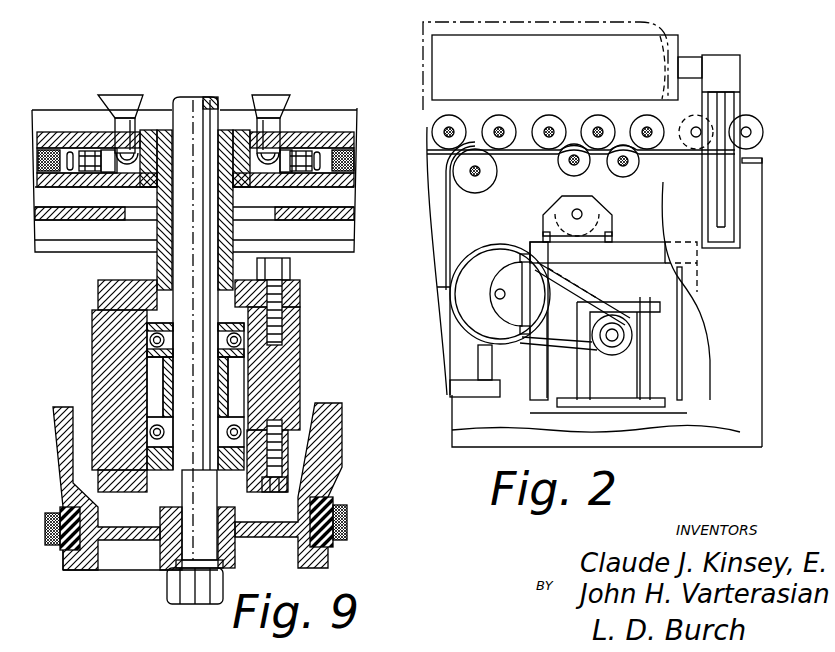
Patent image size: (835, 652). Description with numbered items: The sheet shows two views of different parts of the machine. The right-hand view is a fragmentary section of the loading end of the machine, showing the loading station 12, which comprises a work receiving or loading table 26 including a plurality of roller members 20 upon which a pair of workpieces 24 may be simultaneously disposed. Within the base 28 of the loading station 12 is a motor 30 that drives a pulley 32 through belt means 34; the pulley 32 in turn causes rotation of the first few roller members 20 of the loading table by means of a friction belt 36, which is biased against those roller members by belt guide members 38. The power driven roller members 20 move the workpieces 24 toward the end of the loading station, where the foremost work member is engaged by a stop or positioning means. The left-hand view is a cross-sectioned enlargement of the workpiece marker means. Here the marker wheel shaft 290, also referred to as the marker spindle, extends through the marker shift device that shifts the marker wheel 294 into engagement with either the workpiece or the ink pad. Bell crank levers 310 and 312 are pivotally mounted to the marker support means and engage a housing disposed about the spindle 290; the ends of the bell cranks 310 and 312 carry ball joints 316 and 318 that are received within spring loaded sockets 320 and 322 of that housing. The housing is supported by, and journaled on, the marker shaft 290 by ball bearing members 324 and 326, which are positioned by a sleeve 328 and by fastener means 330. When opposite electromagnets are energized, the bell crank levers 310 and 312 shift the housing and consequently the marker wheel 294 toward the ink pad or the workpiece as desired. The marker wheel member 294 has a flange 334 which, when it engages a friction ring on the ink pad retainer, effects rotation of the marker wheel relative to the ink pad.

In FIG. 9, the marker wheel shaft 290 is at (184, 107).
In FIG. 9, the bell crank lever 310 is at (128, 108).
In FIG. 9, the bell crank lever 312 is at (268, 108).
In FIG. 9, the ball joint 316 is at (122, 157).
In FIG. 9, the ball joint 318 is at (278, 150).
In FIG. 9, the spring loaded socket 320 is at (80, 175).
In FIG. 9, the spring loaded socket 322 is at (305, 175).
In FIG. 9, the ball bearing member 324 is at (253, 353).
In FIG. 9, the ball bearing member 326 is at (276, 418).
In FIG. 9, the sleeve 328 is at (165, 398).
In FIG. 9, the fastener means 330 is at (245, 488).
In FIG. 9, the flange 334 is at (340, 467).
In FIG. 9, the marker wheel 294 is at (80, 568).
In FIG. 2, the workpiece 24 is at (677, 45).
In FIG. 2, the loading table 26 is at (473, 130).
In FIG. 2, the roller member 20 is at (536, 128).
In FIG. 2, the friction belt 36 is at (513, 152).
In FIG. 2, the pulley 32 is at (482, 265).
In FIG. 2, the belt guide member 38 is at (622, 177).
In FIG. 2, the belt means 34 is at (616, 300).
In FIG. 2, the base 28 is at (743, 311).
In FIG. 2, the loading station 12 is at (765, 349).
In FIG. 2, the motor 30 is at (637, 390).